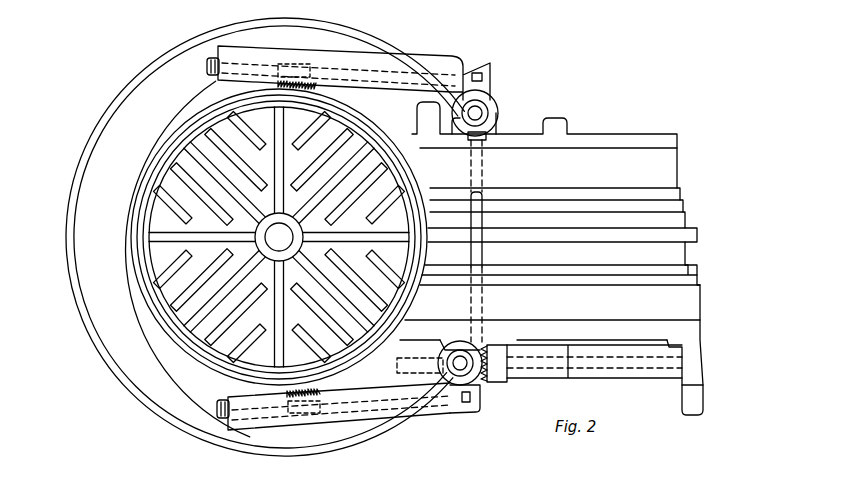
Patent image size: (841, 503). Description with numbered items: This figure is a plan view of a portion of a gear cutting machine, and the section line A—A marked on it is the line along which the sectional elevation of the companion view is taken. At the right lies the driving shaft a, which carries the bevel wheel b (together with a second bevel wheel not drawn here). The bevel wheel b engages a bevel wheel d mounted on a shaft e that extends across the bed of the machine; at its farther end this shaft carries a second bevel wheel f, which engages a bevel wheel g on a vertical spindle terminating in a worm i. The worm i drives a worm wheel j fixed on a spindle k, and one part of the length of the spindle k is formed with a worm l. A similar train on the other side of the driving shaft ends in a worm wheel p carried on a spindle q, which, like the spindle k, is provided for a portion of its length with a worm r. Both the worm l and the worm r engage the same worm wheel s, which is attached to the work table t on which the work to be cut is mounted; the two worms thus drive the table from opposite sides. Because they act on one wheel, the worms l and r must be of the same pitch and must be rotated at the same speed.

The table t is at (188, 153).
The worm wheel s is at (150, 167).
The section line A— A is at (213, 408).
The spindle k is at (373, 80).
The worm l is at (297, 85).
The worm wheel j is at (492, 96).
The worm i is at (498, 112).
The bevel wheel g is at (496, 124).
The second bevel wheel f is at (486, 138).
The shaft e is at (478, 248).
The bevel wheel d is at (489, 342).
The bevel wheel b is at (505, 380).
The worm wheel p is at (478, 402).
The spindle q is at (442, 408).
The worm r is at (330, 397).
The driving shaft a is at (641, 366).